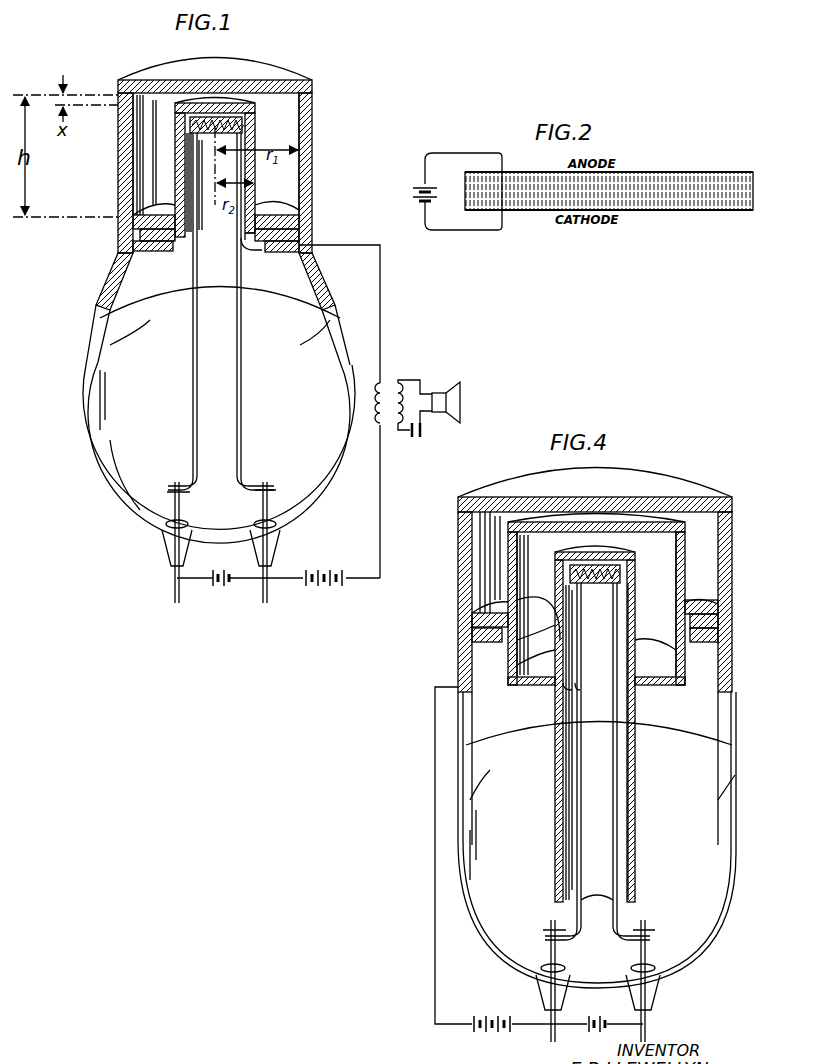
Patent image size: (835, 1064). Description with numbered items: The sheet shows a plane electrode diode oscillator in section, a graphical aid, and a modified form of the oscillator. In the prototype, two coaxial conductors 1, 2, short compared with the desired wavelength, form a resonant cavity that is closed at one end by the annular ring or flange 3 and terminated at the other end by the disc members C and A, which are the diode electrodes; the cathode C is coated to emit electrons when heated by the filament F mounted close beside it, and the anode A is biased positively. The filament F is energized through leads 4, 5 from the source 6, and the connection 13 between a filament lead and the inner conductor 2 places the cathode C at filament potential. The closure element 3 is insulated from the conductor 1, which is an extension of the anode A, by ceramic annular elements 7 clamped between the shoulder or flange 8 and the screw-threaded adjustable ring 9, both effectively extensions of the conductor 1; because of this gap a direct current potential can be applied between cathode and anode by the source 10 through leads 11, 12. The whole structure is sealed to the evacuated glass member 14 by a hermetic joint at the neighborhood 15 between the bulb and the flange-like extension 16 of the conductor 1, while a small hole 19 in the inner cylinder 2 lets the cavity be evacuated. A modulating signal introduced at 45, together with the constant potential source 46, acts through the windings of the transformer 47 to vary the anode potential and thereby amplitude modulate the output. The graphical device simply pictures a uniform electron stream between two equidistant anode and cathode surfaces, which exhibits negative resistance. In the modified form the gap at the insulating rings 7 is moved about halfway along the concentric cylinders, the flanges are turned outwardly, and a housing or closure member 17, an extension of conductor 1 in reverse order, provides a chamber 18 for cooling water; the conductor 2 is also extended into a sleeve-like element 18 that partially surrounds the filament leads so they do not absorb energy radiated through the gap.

In FIG. 1, the coaxial conductor 1 is at (125, 178).
In FIG. 1, the coaxial conductor 2 is at (178, 158).
In FIG. 4, the coaxial conductor 2 is at (560, 603).
In FIG. 1, the annular ring or flange 3 is at (148, 235).
In FIG. 4, the annular ring or flange 3 is at (470, 630).
In FIG. 1, the filament lead 4 is at (193, 396).
In FIG. 4, the filament lead 4 is at (581, 754).
In FIG. 1, the filament lead 5 is at (241, 396).
In FIG. 4, the filament lead 5 is at (613, 781).
In FIG. 1, the source 6 is at (229, 588).
In FIG. 4, the source 6 is at (601, 1018).
In FIG. 1, the annular insulating elements 7 is at (245, 238).
In FIG. 4, the annular insulating elements 7 is at (718, 638).
In FIG. 1, the shoulder or flange 8 is at (289, 215).
In FIG. 4, the shoulder or flange 8 is at (718, 606).
In FIG. 1, the screw-threaded adjustable conducting ring 9 is at (284, 252).
In FIG. 4, the screw-threaded adjustable conducting ring 9 is at (718, 645).
In FIG. 1, the source 10 is at (320, 588).
In FIG. 4, the source 10 is at (494, 1018).
In FIG. 1, the lead 11 is at (293, 582).
In FIG. 4, the lead 11 is at (536, 1024).
In FIG. 1, the lead 12 is at (380, 524).
In FIG. 4, the lead 12 is at (435, 977).
In FIG. 1, the connection 13 is at (243, 250).
In FIG. 4, the connection 13 is at (565, 690).
In FIG. 1, the evacuated glass member 14 is at (135, 514).
In FIG. 4, the evacuated glass member 14 is at (733, 898).
In FIG. 1, the hermetic seal neighborhood 15 is at (100, 318).
In FIG. 4, the hermetic seal neighborhood 15 is at (470, 756).
In FIG. 1, the flange-like extension 16 is at (120, 285).
In FIG. 4, the flange-like extension 16 is at (463, 673).
In FIG. 4, the housing or closure member 17 is at (680, 482).
In FIG. 4, the chamber / sleeve-like element 18 is at (705, 536).
In FIG. 1, the small hole 19 is at (252, 155).
In FIG. 4, the small hole 19 is at (633, 636).
In FIG. 1, the signal input 45 is at (461, 404).
In FIG. 1, the constant potential source 46 is at (418, 430).
In FIG. 1, the transformer 47 is at (384, 383).
In FIG. 1, the anode A is at (193, 80).
In FIG. 4, the anode A is at (648, 527).
In FIG. 1, the cathode C is at (240, 101).
In FIG. 4, the cathode C is at (568, 551).
In FIG. 1, the filament F is at (217, 139).
In FIG. 4, the filament F is at (595, 591).